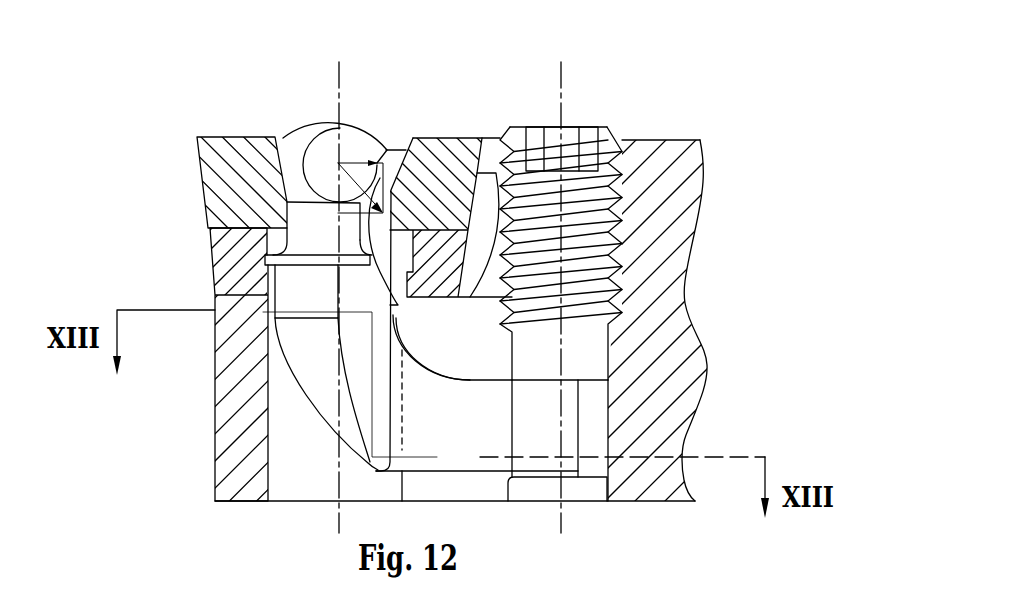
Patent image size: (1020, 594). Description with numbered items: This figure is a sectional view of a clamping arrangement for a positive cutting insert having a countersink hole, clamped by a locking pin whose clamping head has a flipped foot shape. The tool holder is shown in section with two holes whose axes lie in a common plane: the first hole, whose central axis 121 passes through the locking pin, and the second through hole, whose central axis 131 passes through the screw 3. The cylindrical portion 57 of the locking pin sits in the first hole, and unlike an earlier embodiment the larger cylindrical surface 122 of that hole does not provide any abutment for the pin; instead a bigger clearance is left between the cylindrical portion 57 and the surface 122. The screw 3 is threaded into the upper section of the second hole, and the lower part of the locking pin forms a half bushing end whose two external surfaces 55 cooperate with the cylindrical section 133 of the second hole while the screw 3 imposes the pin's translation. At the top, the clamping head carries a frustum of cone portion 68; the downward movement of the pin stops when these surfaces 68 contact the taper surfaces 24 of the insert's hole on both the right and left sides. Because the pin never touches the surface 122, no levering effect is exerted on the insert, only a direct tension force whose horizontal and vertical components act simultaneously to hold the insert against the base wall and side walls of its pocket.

The screw 3 is at (610, 127).
The taper surfaces of the insert's hole 24 is at (273, 136).
The frustum of cone portion 68 is at (293, 180).
The central axis of first hole 121 is at (340, 80).
The central axis of second hole 131 is at (562, 82).
The cylindrical portion of the locking pin 57 is at (292, 290).
The larger section of the first hole 122 is at (268, 452).
The external surfaces of the half bushing end 55 is at (542, 460).
The cylindrical section of the second hole 133 is at (602, 466).